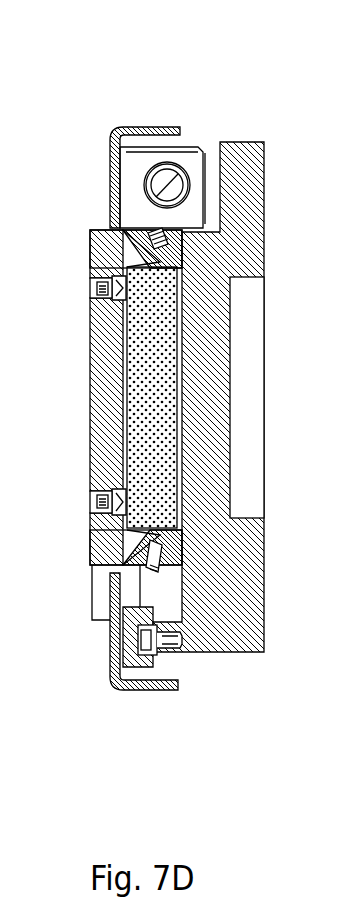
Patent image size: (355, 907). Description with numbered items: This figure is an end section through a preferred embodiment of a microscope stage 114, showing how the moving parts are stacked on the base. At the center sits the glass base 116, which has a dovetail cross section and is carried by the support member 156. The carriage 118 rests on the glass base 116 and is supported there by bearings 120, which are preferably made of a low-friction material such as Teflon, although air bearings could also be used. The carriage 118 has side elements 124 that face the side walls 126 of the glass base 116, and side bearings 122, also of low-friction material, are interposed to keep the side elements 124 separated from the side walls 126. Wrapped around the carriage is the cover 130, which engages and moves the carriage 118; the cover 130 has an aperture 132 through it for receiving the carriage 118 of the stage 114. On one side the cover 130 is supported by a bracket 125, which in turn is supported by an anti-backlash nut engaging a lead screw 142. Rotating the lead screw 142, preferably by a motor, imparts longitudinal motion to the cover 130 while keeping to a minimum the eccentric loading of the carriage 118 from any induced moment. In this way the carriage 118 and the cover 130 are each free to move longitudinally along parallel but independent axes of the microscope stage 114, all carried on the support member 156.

The microscope stage 114 is at (163, 728).
The glass base 116 is at (147, 440).
The carriage 118 is at (107, 270).
The bearings 120 is at (114, 278).
The side bearings 122 is at (113, 240).
The side elements 124 is at (137, 240).
The bracket 125 is at (197, 158).
The side walls 126 is at (183, 318).
The cover 130 is at (130, 123).
The aperture 132 is at (100, 578).
The lead screw 142 is at (180, 162).
The support member 156 is at (223, 643).